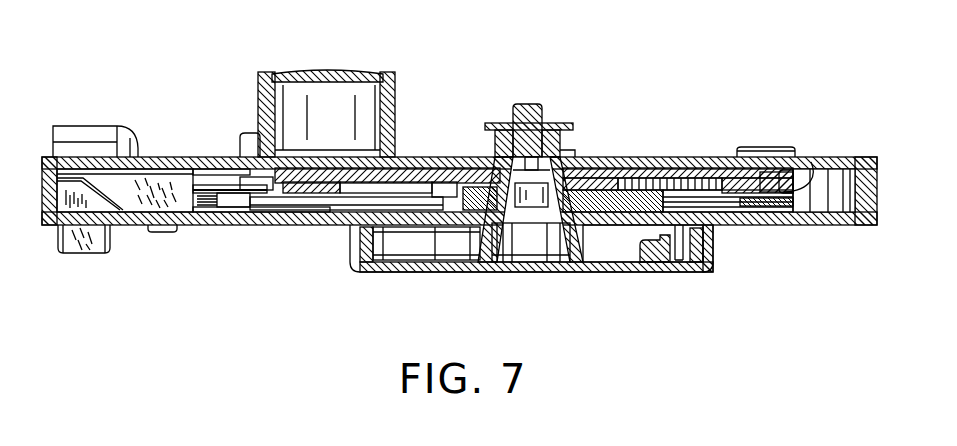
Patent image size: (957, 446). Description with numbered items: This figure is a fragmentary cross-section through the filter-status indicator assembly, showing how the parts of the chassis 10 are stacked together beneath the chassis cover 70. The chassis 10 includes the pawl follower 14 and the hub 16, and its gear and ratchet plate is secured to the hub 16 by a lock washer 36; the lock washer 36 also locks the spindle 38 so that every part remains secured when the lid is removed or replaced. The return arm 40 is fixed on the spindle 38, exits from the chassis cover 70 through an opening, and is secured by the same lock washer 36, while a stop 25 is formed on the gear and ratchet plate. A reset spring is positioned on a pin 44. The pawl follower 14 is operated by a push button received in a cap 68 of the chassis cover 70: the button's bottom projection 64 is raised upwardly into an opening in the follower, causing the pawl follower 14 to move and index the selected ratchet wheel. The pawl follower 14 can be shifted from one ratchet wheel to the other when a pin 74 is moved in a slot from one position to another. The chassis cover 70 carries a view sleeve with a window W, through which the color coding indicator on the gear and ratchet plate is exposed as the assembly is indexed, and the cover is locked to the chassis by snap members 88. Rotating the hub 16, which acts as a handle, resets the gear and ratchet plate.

The chassis 10 is at (788, 255).
The pawl follower 14 is at (178, 177).
The hub 16 is at (348, 250).
The stop 25 is at (811, 162).
The lock washer 36 is at (558, 125).
The spindle 38 is at (530, 107).
The return arm 40 is at (609, 165).
The pin 44 is at (713, 238).
The bottom projection 64 is at (97, 242).
The cap 68 is at (92, 130).
The chassis cover 70 is at (609, 158).
The pin 74 is at (167, 228).
The snap members 88 is at (756, 149).
The window W is at (343, 70).